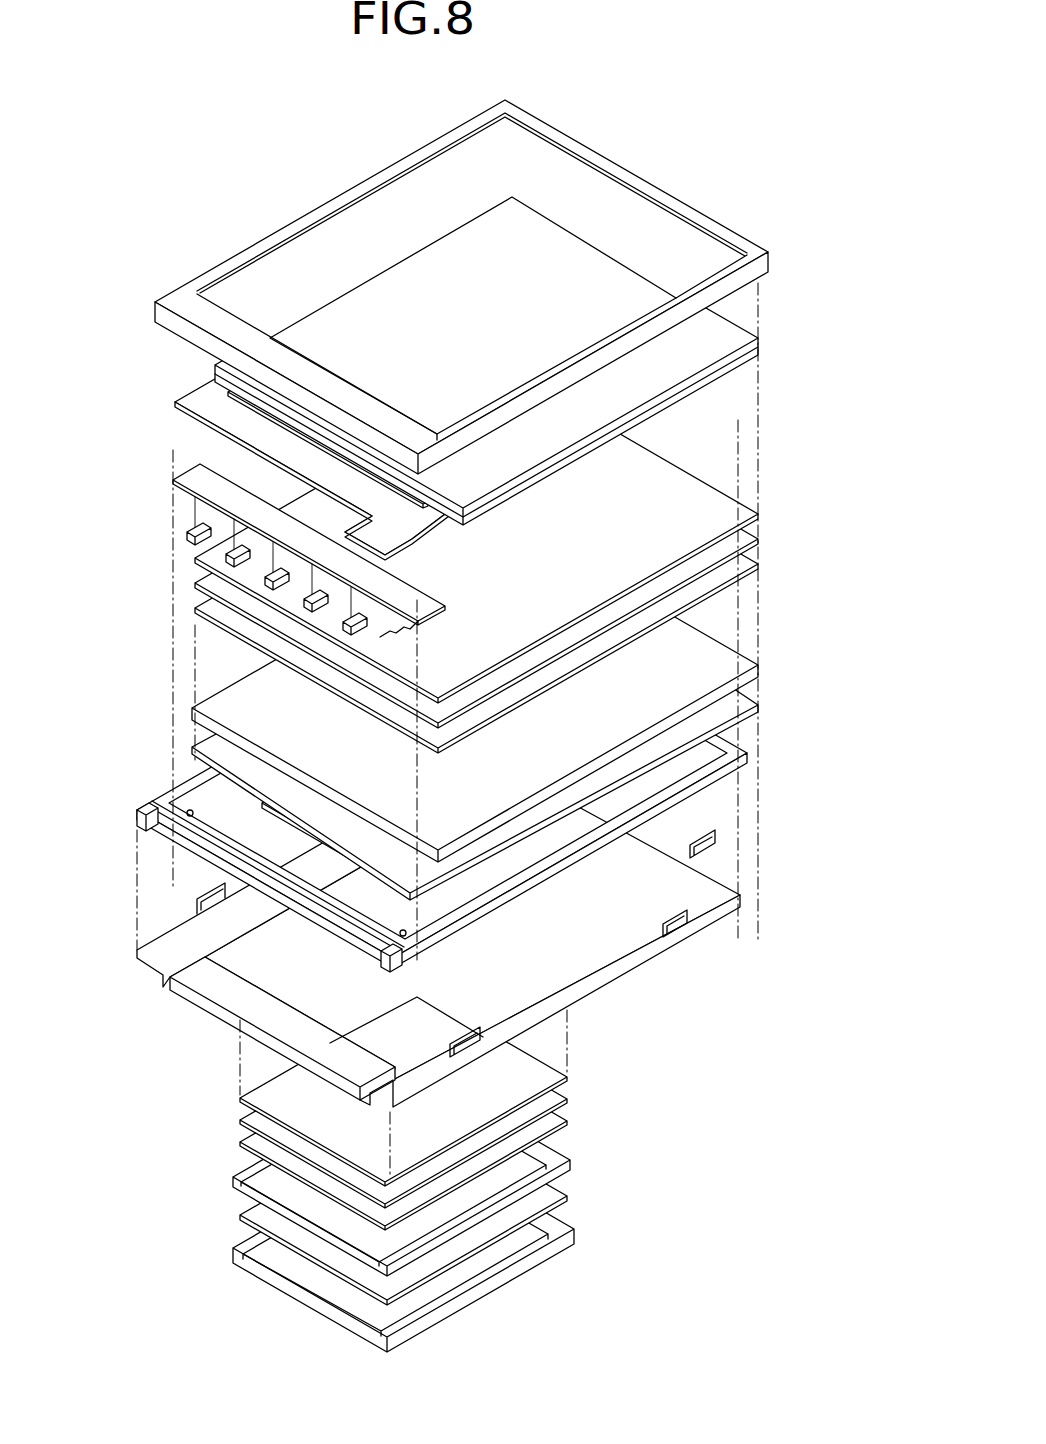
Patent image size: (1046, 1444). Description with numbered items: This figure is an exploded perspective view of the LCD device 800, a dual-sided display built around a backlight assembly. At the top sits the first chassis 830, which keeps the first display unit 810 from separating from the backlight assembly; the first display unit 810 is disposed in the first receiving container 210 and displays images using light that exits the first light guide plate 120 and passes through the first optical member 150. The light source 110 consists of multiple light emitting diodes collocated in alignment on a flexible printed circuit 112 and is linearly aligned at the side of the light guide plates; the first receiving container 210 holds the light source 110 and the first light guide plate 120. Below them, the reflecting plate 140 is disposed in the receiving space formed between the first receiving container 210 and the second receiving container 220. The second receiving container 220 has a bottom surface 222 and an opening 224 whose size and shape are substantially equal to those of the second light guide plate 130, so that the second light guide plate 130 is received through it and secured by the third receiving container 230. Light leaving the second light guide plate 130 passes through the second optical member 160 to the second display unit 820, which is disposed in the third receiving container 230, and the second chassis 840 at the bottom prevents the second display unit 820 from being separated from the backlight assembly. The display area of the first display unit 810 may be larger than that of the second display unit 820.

The LCD device 800 is at (259, 163).
The first chassis 830 is at (695, 215).
The first display unit 810 is at (722, 336).
The flexible printed circuit 112 is at (185, 478).
The light source 110 is at (200, 536).
The first optical member 150 is at (765, 513).
The first light guide plate 120 is at (760, 667).
The reflecting plate 140 is at (210, 742).
The first receiving container 210 is at (163, 806).
The second light guide plate 130 is at (263, 803).
The bottom surface 222 is at (695, 893).
The second receiving container 220 is at (485, 929).
The opening 224 is at (518, 953).
The second optical member 160 is at (575, 1083).
The third receiving container 230 is at (573, 1164).
The second display unit 820 is at (563, 1192).
The second chassis 840 is at (553, 1250).